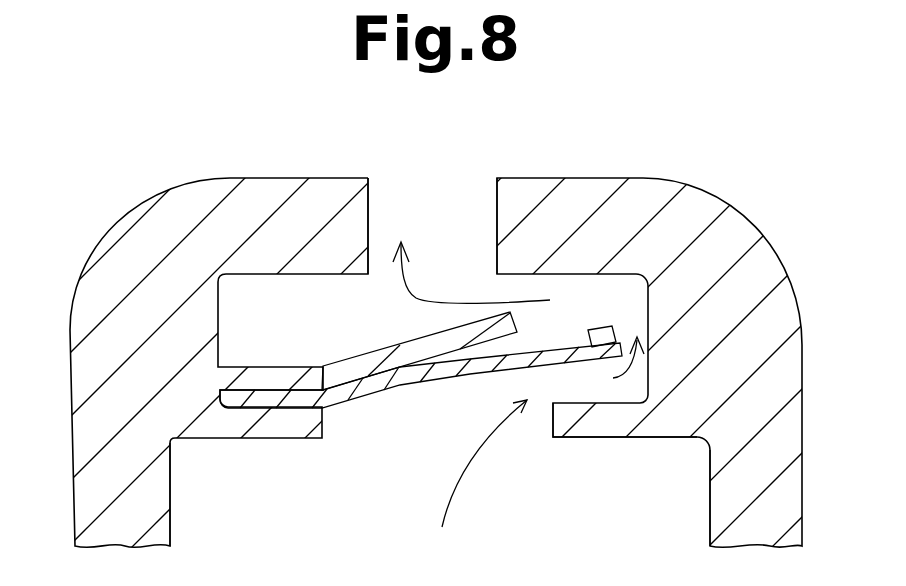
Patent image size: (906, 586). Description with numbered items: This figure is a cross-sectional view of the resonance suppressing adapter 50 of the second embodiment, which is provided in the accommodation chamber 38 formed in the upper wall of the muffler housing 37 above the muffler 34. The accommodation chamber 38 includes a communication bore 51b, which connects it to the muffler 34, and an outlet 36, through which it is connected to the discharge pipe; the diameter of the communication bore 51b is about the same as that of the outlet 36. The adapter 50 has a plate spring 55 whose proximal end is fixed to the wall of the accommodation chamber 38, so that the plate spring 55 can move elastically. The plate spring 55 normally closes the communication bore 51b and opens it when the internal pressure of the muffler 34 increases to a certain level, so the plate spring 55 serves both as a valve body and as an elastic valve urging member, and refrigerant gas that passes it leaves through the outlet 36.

The muffler 34 is at (293, 518).
The outlet 36 is at (497, 207).
The muffler housing 37 is at (260, 200).
The accommodation chamber 38 is at (647, 303).
The adapter 50 is at (334, 354).
The communication bore 51b is at (553, 422).
The plate spring 55 is at (417, 390).